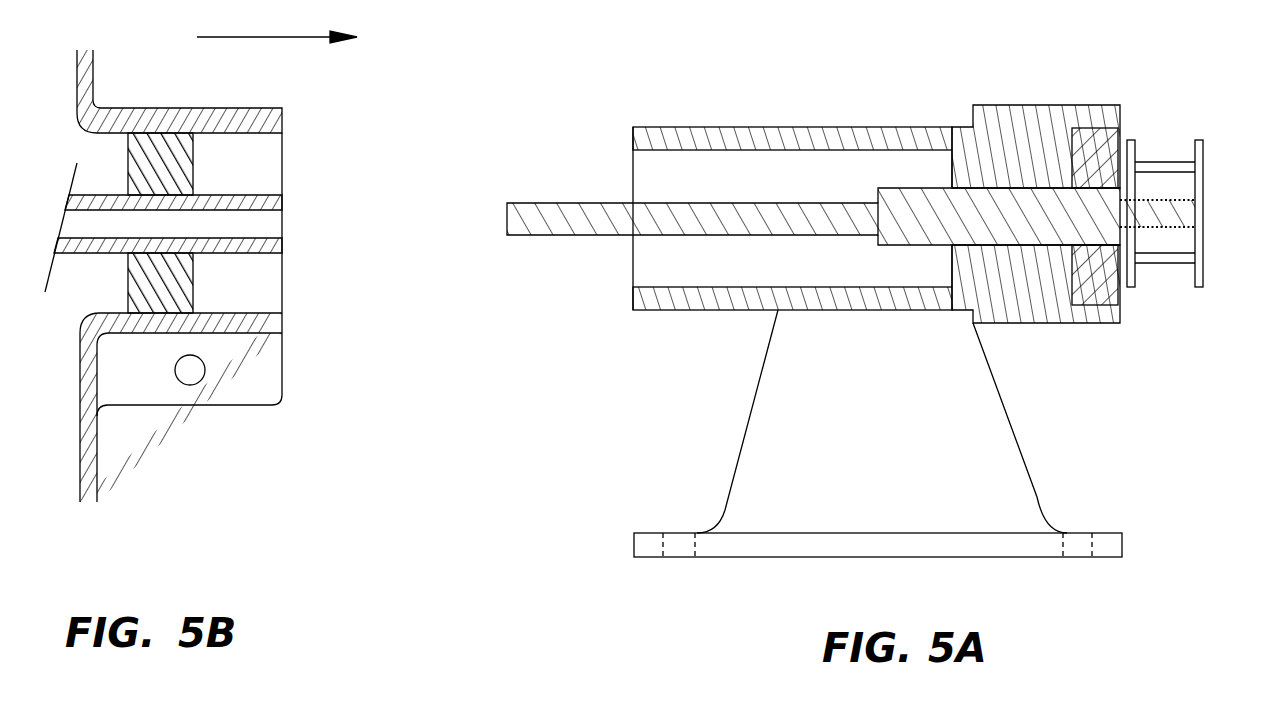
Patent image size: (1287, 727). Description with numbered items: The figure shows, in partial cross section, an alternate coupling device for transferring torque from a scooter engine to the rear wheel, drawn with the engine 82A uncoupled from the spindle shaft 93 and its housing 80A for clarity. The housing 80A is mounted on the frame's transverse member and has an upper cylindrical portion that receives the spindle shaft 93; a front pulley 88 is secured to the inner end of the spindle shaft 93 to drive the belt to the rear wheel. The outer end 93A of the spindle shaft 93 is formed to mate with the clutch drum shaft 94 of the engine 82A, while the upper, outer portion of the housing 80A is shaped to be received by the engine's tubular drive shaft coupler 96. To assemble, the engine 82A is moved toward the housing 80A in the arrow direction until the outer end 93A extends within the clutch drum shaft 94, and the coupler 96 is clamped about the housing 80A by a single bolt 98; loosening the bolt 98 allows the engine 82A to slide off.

In FIG. 5B, the engine 82A is at (115, 75).
In FIG. 5B, the clutch drum shaft 94 is at (268, 193).
In FIG. 5B, the tubular drive shaft coupler 96 is at (268, 317).
In FIG. 5B, the bolt 98 is at (197, 380).
In FIG. 5A, the outer end of spindle shaft 93A is at (580, 212).
In FIG. 5A, the spindle shaft 93 is at (805, 212).
In FIG. 5A, the front pulley 88 is at (1203, 157).
In FIG. 5A, the housing 80A is at (767, 432).